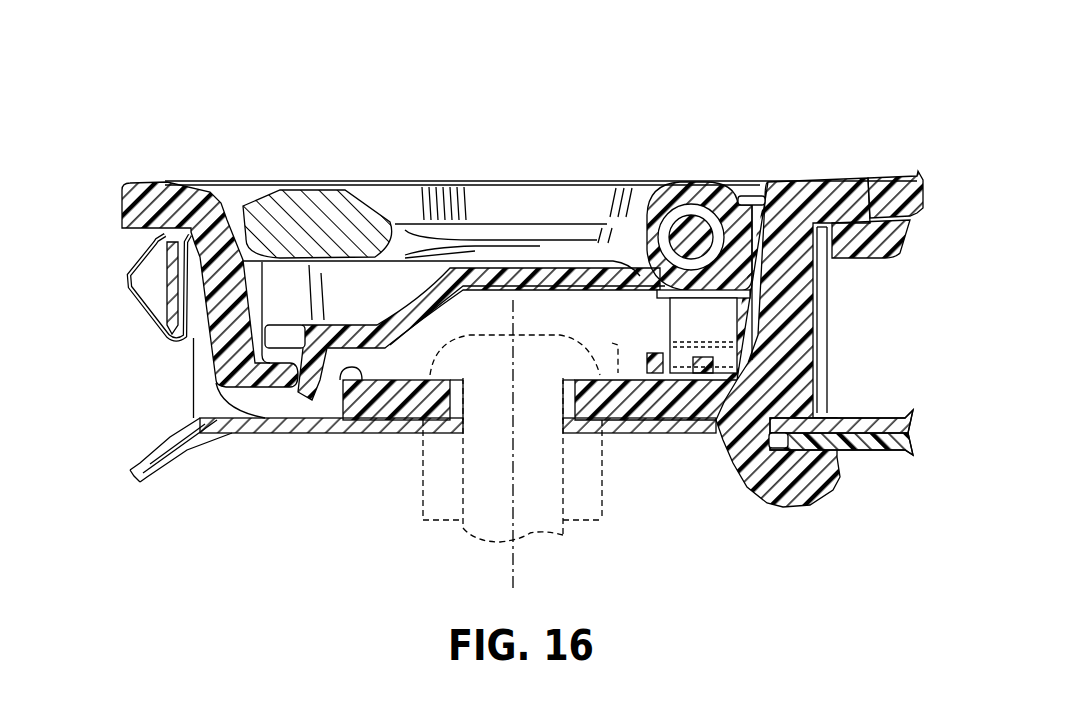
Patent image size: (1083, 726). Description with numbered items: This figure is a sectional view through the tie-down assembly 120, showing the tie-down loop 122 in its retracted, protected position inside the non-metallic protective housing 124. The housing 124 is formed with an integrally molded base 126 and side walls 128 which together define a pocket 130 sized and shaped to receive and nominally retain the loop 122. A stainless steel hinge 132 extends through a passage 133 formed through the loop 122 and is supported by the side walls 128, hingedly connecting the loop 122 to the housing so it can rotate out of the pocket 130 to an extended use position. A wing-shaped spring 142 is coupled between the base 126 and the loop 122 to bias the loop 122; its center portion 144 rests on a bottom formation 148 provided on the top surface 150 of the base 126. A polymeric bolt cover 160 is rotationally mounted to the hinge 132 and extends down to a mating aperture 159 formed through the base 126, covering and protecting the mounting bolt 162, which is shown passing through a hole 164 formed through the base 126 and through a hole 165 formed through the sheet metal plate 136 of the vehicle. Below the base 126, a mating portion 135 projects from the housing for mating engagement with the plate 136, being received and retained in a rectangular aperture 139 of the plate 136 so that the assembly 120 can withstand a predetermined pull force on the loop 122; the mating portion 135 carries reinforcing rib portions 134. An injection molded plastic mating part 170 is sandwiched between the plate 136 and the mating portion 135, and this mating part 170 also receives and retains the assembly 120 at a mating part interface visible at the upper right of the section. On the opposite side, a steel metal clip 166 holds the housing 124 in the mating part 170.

The tie-down assembly 120 is at (605, 84).
The tie-down loop 122 is at (696, 170).
The protective housing 124 is at (872, 168).
The base 126 is at (647, 405).
The side walls 128 is at (146, 195).
The pocket 130 is at (233, 225).
The hinge 132 is at (718, 212).
The passage 133 is at (668, 205).
The reinforcing rib portions 134 is at (835, 495).
The mating portion 135 is at (800, 524).
The sheet metal plate 136 is at (360, 445).
The rectangular aperture 139 is at (780, 423).
The spring 142 is at (757, 328).
The center portion 144 is at (727, 360).
The bottom formation 148 is at (708, 370).
The top surface 150 is at (332, 380).
The mating aperture 159 is at (322, 410).
The bolt cover 160 is at (524, 252).
The mounting bolt 162 is at (463, 528).
The hole 164 is at (422, 433).
The hole 165 is at (592, 434).
The metal clip 166 is at (150, 310).
The mating part 170 is at (920, 234).